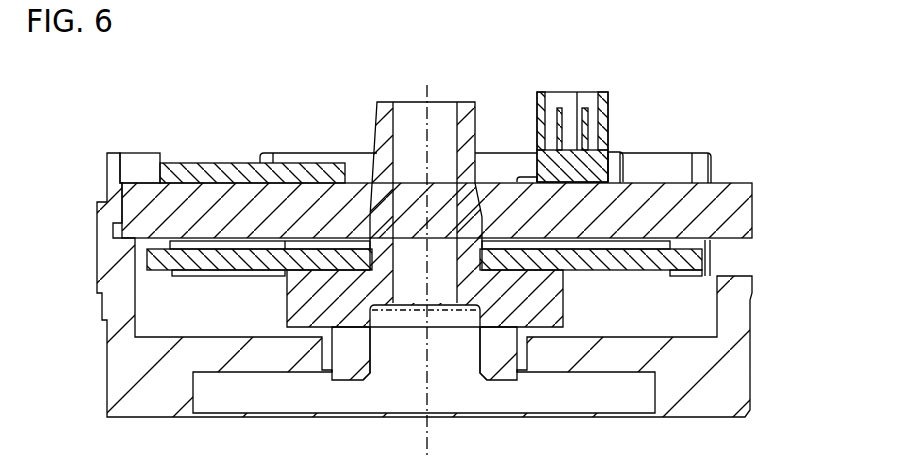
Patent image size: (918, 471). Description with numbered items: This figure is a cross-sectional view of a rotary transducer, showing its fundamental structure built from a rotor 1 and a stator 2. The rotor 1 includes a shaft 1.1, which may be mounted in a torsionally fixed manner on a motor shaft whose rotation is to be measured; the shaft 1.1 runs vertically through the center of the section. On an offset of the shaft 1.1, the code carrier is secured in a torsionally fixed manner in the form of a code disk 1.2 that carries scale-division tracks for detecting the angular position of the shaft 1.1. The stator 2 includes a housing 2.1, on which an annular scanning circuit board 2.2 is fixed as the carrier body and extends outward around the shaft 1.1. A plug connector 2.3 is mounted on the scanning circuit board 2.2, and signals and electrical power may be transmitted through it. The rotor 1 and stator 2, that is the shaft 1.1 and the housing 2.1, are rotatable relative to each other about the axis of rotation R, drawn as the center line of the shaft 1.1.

The rotor 1 is at (370, 126).
The shaft 1.1 is at (450, 108).
The code disk 1.2 is at (242, 266).
The stator 2 is at (104, 361).
The housing 2.1 is at (107, 395).
The scanning circuit board 2.2 is at (738, 198).
The plug connector 2.3 is at (608, 107).
The axis of rotation R is at (427, 90).